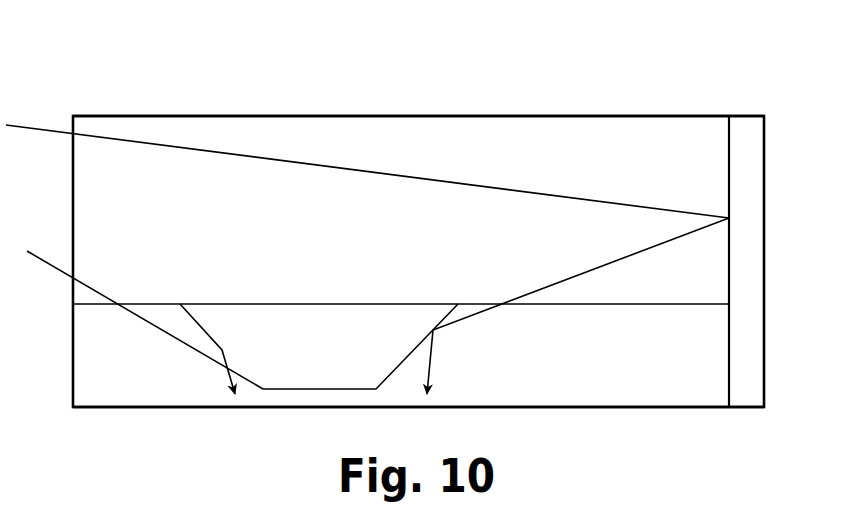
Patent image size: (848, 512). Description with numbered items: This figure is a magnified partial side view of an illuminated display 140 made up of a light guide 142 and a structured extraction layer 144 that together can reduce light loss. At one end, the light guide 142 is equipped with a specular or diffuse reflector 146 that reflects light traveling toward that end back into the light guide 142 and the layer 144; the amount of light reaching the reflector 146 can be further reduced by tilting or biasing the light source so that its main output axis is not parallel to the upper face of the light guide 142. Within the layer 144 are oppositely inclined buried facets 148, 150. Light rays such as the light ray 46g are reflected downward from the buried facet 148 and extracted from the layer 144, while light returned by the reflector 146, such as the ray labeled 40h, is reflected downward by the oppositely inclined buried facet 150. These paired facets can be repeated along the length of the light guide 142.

The illuminated display 140 is at (604, 74).
The light guide 142 is at (397, 115).
The structured extraction layer 144 is at (122, 367).
The reflector 146 is at (766, 276).
The buried facet 148 is at (199, 324).
The buried facet 150 is at (397, 368).
The incident light ray 40h is at (47, 128).
The light ray 46g is at (52, 264).